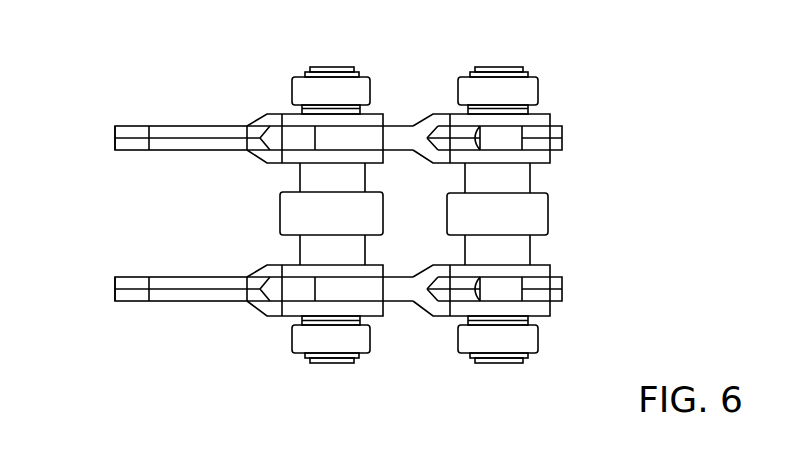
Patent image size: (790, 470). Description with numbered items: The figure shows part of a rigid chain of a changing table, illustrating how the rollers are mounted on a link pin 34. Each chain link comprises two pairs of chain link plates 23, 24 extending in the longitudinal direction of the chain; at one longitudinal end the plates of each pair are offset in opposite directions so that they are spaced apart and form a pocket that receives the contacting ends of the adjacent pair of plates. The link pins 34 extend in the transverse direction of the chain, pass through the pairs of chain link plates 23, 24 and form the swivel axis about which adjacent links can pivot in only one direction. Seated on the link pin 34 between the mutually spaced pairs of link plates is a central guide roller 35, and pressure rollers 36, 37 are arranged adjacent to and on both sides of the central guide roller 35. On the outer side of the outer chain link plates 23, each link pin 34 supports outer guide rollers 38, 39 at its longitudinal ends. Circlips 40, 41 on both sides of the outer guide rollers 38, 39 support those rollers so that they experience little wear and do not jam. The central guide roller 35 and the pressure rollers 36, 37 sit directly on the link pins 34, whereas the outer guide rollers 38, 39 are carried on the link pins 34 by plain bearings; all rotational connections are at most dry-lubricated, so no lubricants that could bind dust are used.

The chain link plate 23 is at (164, 129).
The chain link plate 24 is at (113, 139).
The link pin 34 is at (500, 66).
The central guide roller 35 is at (540, 213).
The pressure roller 36 is at (523, 186).
The pressure roller 37 is at (523, 247).
The outer guide roller 38 is at (526, 91).
The outer guide roller 39 is at (525, 341).
The circlip 40 is at (526, 73).
The circlip 41 is at (533, 108).